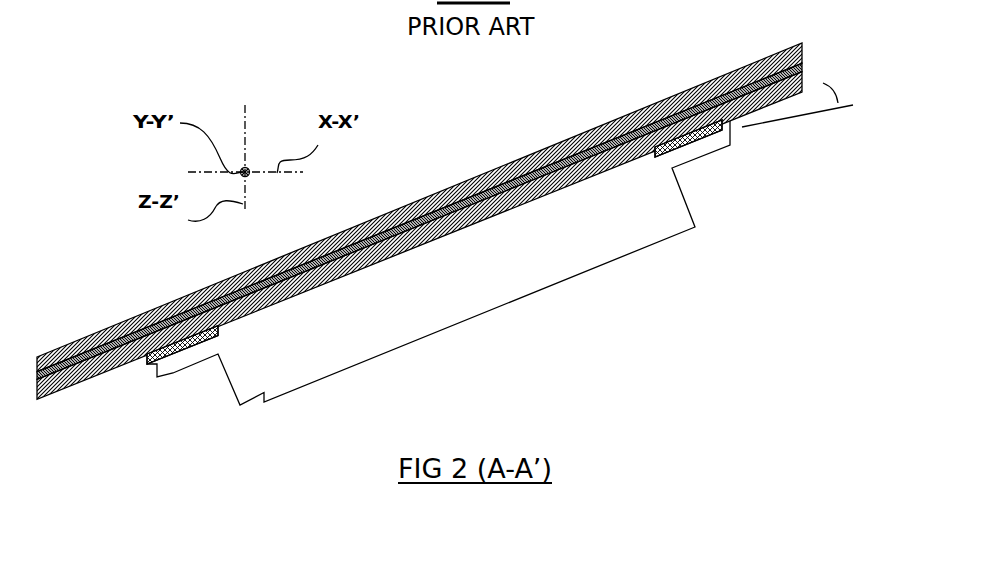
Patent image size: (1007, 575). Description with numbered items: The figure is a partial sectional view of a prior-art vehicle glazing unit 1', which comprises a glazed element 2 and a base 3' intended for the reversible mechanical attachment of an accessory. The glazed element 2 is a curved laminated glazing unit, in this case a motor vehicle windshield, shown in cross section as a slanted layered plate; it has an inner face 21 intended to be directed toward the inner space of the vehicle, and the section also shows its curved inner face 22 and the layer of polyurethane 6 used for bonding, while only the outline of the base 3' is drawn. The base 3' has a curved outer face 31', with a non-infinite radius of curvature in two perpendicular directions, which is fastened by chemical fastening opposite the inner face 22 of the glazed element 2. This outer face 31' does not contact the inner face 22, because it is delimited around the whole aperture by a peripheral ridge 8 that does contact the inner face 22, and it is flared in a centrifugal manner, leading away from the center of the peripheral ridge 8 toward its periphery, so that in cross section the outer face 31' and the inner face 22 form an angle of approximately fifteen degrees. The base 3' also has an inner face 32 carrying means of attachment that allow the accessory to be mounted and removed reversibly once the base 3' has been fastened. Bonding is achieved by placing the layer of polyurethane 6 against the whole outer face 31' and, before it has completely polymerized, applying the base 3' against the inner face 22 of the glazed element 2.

The glazing unit 1' is at (128, 50).
The glazed element 2 is at (419, 204).
The inner face 21 is at (571, 138).
The inner face of the glazed element 22 is at (688, 112).
The outer face 31' is at (747, 142).
The inner face of the base 32 is at (627, 258).
The peripheral ridge 8 is at (645, 156).
The layer of polyurethane 6 is at (147, 363).
The base 3' is at (438, 289).